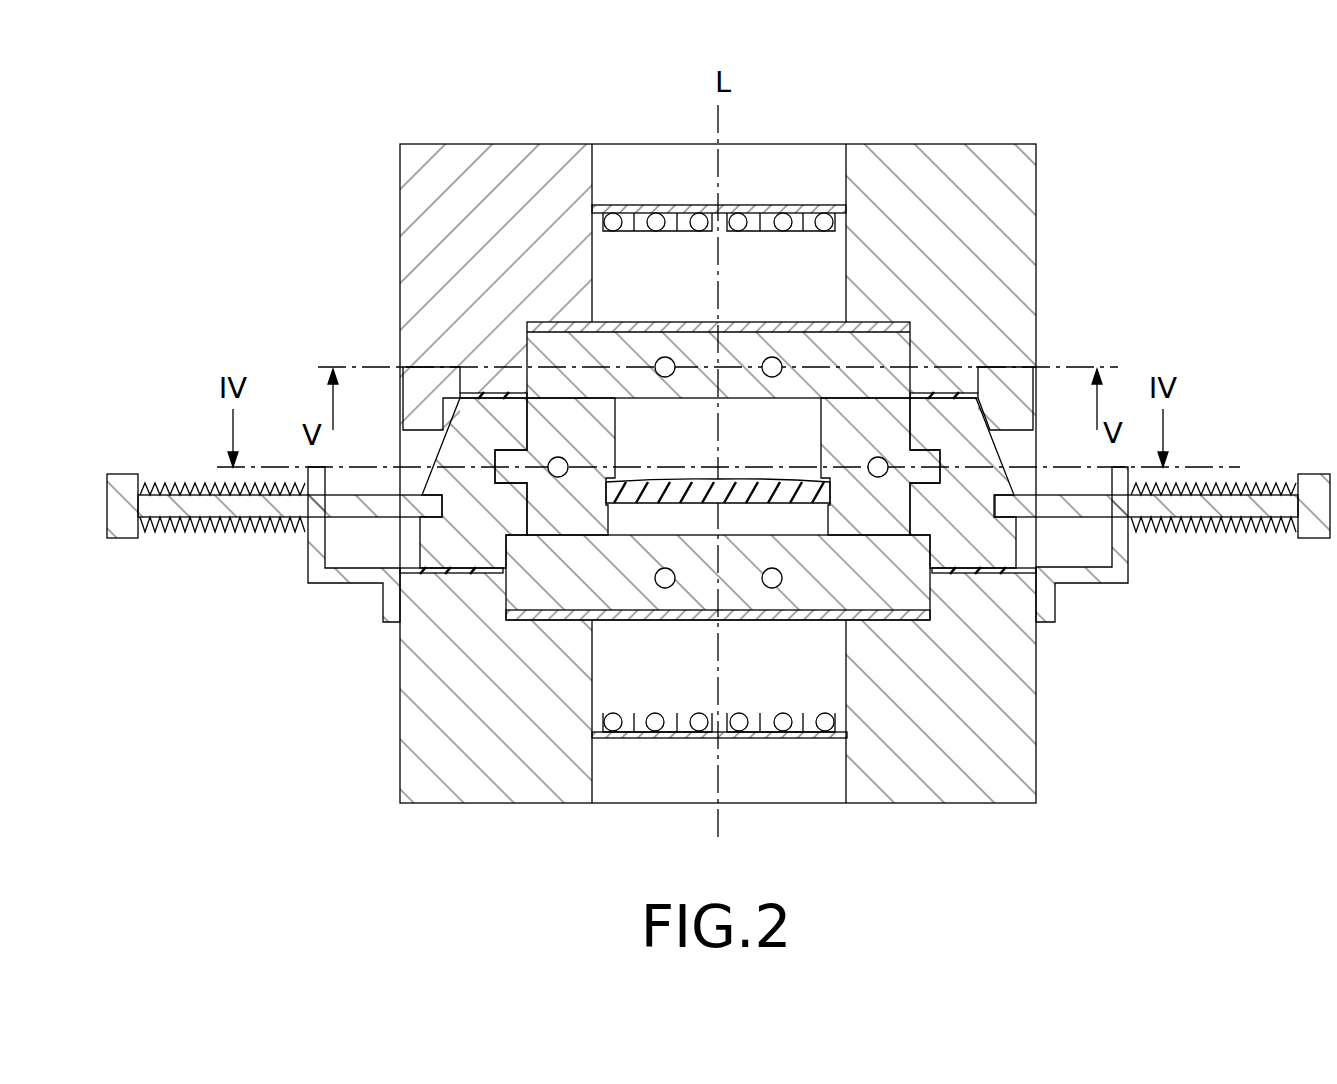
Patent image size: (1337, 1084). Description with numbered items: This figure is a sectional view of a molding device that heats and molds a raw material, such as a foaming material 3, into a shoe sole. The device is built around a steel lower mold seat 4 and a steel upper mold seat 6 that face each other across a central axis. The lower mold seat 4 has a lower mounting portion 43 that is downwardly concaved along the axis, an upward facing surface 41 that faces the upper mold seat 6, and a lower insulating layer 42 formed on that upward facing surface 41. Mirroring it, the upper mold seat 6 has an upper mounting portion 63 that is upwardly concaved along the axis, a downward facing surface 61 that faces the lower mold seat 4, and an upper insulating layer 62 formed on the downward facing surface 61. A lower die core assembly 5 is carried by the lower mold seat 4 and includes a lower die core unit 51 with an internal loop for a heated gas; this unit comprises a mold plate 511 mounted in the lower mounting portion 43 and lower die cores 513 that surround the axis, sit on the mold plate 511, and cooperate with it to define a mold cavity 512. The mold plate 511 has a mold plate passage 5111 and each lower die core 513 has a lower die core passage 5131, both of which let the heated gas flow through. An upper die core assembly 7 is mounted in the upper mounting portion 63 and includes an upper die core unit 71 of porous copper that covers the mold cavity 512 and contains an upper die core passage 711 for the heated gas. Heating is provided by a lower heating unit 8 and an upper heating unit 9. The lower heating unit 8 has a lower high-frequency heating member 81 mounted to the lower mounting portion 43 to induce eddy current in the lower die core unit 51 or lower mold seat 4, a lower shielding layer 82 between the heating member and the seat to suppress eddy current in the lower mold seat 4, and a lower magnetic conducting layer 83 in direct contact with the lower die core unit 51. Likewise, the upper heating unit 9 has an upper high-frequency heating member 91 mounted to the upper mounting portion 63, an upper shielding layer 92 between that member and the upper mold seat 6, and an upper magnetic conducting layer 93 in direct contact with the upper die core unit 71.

The foaming material 3 is at (624, 514).
The lower mold seat 4 is at (1046, 772).
The upward facing surface 41 is at (422, 573).
The lower insulating layer 42 is at (400, 572).
The lower mounting portion 43 is at (825, 740).
The lower die core assembly 5 is at (718, 556).
The lower die core unit 51 is at (418, 538).
The mold plate 511 is at (905, 595).
The mold cavity 512 is at (830, 590).
The lower die core 513 is at (573, 518).
The lower die core passage 5131 is at (551, 474).
The mold plate passage 5111 is at (663, 588).
The upper mold seat 6 is at (1040, 137).
The downward facing surface 61 is at (483, 396).
The upper insulating layer 62 is at (475, 396).
The upper mounting portion 63 is at (612, 204).
The upper die core assembly 7 is at (916, 348).
The upper die core unit 71 is at (557, 347).
The upper die core passage 711 is at (660, 359).
The lower heating unit 8 is at (722, 800).
The lower high-frequency heating member 81 is at (757, 729).
The lower shielding layer 82 is at (673, 738).
The lower magnetic conducting layer 83 is at (637, 617).
The upper heating unit 9 is at (716, 145).
The upper high-frequency heating member 91 is at (758, 220).
The upper shielding layer 92 is at (655, 212).
The upper magnetic conducting layer 93 is at (880, 327).